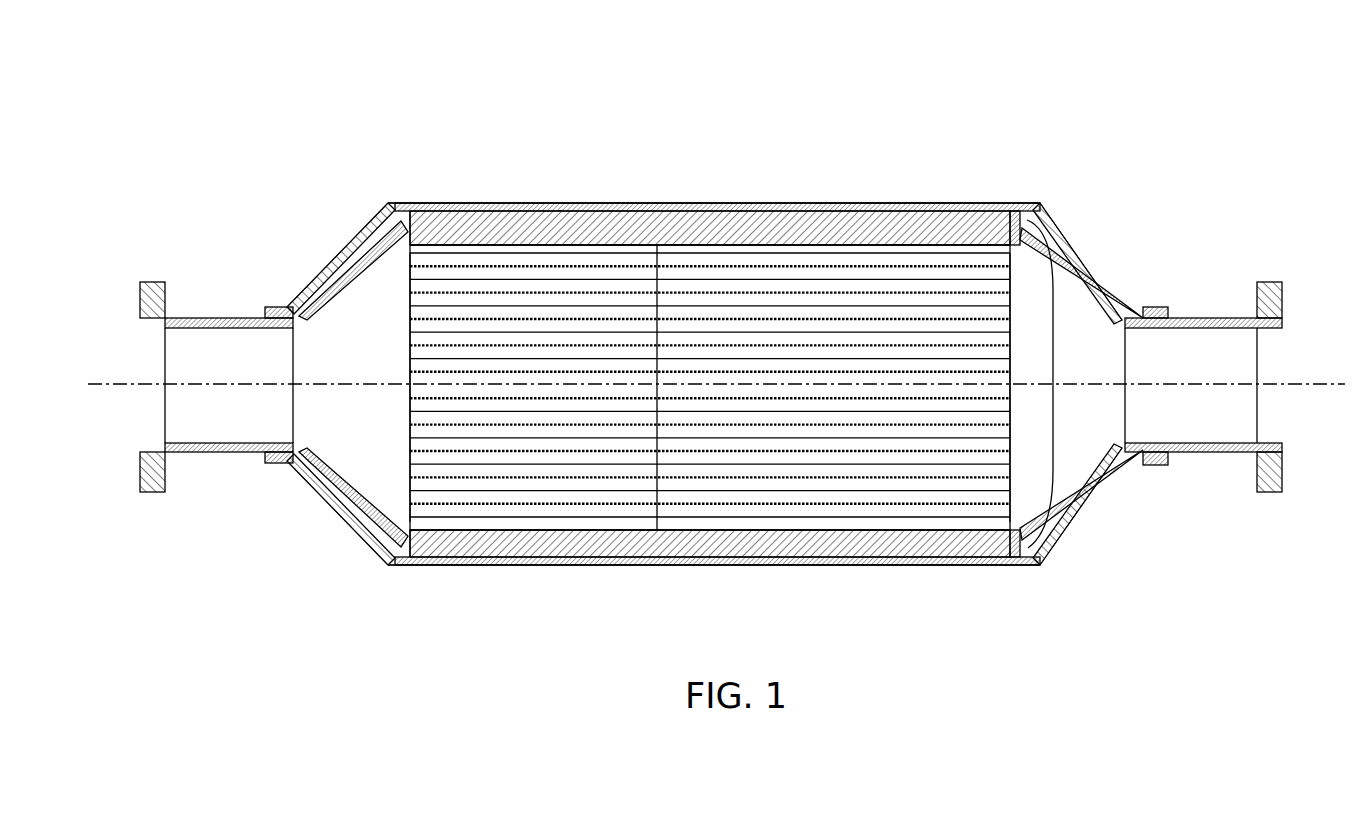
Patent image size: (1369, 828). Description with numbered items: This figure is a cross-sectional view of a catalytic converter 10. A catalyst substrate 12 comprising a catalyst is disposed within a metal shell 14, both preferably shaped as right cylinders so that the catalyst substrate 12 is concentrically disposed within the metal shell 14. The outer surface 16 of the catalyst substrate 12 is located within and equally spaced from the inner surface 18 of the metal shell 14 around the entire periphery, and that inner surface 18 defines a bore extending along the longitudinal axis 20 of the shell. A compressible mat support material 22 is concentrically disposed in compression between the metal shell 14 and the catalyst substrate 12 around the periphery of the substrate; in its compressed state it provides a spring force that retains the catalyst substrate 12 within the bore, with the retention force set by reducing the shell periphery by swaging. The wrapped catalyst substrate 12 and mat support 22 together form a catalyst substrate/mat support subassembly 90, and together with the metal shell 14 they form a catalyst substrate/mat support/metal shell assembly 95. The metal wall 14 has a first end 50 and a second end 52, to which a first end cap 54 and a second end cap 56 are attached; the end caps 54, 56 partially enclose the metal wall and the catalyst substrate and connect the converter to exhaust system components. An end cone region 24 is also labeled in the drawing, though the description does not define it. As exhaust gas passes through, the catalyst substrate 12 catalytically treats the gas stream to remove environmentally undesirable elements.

The catalytic converter 10 is at (349, 136).
The catalyst substrate 12 is at (817, 262).
The metal shell 14 is at (940, 568).
The outer surface 16 is at (718, 240).
The inner surface 18 is at (597, 212).
The longitudinal axis 20 is at (217, 383).
The compressible mat support material 22 is at (623, 222).
The inlet end cone 24 is at (325, 507).
The first end 50 is at (410, 418).
The second end 52 is at (1010, 450).
The first end cap 54 is at (333, 270).
The second end cap 56 is at (1130, 297).
The catalyst substrate/mat support subassembly 90 is at (1053, 384).
The catalyst substrate/mat support/metal shell assembly 95 is at (927, 205).